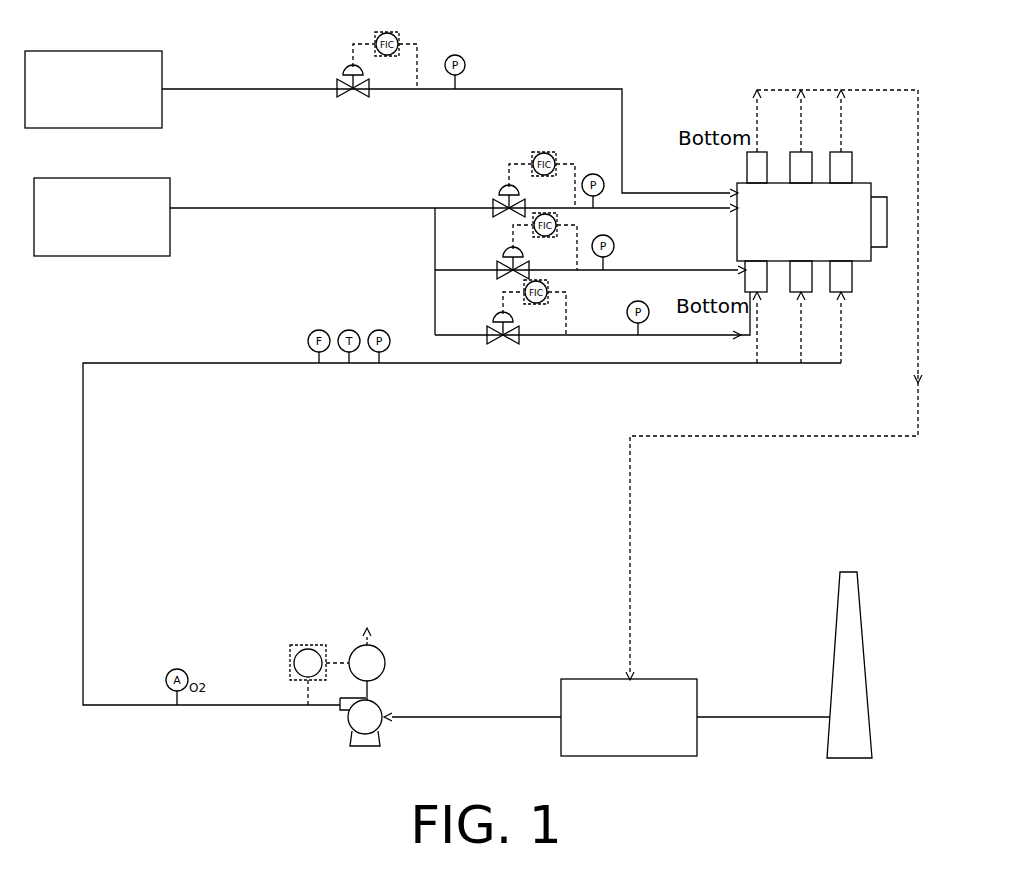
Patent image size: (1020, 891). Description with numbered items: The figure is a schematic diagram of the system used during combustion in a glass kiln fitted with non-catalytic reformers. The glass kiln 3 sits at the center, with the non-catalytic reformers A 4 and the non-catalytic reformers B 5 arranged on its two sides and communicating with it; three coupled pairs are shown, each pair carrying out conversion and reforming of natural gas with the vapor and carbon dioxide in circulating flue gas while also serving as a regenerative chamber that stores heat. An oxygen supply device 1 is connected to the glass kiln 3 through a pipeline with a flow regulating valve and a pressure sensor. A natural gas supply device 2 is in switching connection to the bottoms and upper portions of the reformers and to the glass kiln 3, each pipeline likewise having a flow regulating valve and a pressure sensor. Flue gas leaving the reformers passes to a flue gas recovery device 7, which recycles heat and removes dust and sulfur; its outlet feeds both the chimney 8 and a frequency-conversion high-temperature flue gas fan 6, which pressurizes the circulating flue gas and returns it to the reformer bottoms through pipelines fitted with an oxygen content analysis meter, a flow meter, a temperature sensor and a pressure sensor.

The oxygen supply device 1 is at (93, 89).
The natural gas supply device 2 is at (102, 217).
The glass kiln 3 is at (812, 222).
The non-catalytic reformers A 4 is at (798, 312).
The non-catalytic reformers B 5 is at (799, 140).
The high-temperature flue gas fan 6 is at (414, 676).
The flue gas recovery device 7 is at (629, 717).
The chimney 8 is at (849, 665).